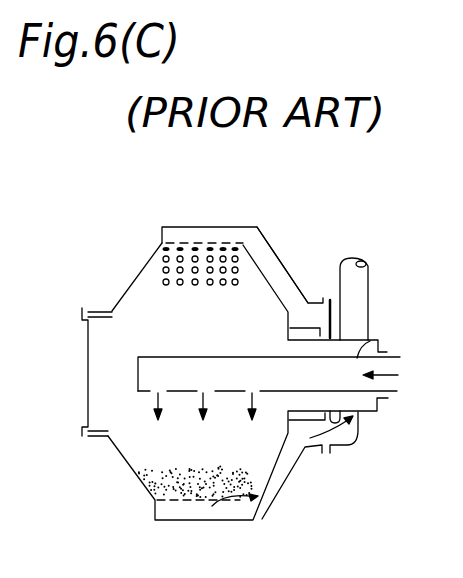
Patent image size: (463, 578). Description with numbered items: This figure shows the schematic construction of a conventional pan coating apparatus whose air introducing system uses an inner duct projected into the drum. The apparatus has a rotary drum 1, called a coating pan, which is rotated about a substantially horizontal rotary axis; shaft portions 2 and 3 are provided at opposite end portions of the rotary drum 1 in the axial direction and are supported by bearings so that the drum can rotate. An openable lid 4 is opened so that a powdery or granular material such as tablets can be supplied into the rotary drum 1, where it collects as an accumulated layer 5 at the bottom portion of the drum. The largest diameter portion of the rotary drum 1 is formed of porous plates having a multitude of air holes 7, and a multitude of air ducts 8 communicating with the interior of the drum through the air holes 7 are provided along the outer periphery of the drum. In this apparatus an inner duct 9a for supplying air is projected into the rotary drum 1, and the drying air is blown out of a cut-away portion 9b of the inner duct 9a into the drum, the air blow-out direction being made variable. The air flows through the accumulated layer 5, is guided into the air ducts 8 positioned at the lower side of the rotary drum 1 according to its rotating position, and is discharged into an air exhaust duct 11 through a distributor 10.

The rotary drum 1 is at (287, 263).
The shaft portion 2 is at (100, 437).
The shaft portion 3 is at (372, 411).
The openable lid 4 is at (88, 405).
The layer of powdery or granular material 5 is at (148, 490).
The air holes 7 is at (210, 248).
The air ducts 8 is at (180, 234).
The inner duct 9a is at (372, 334).
The cut-away portion 9b is at (157, 389).
The distributor 10 is at (330, 313).
The air exhaust duct 11 is at (360, 281).